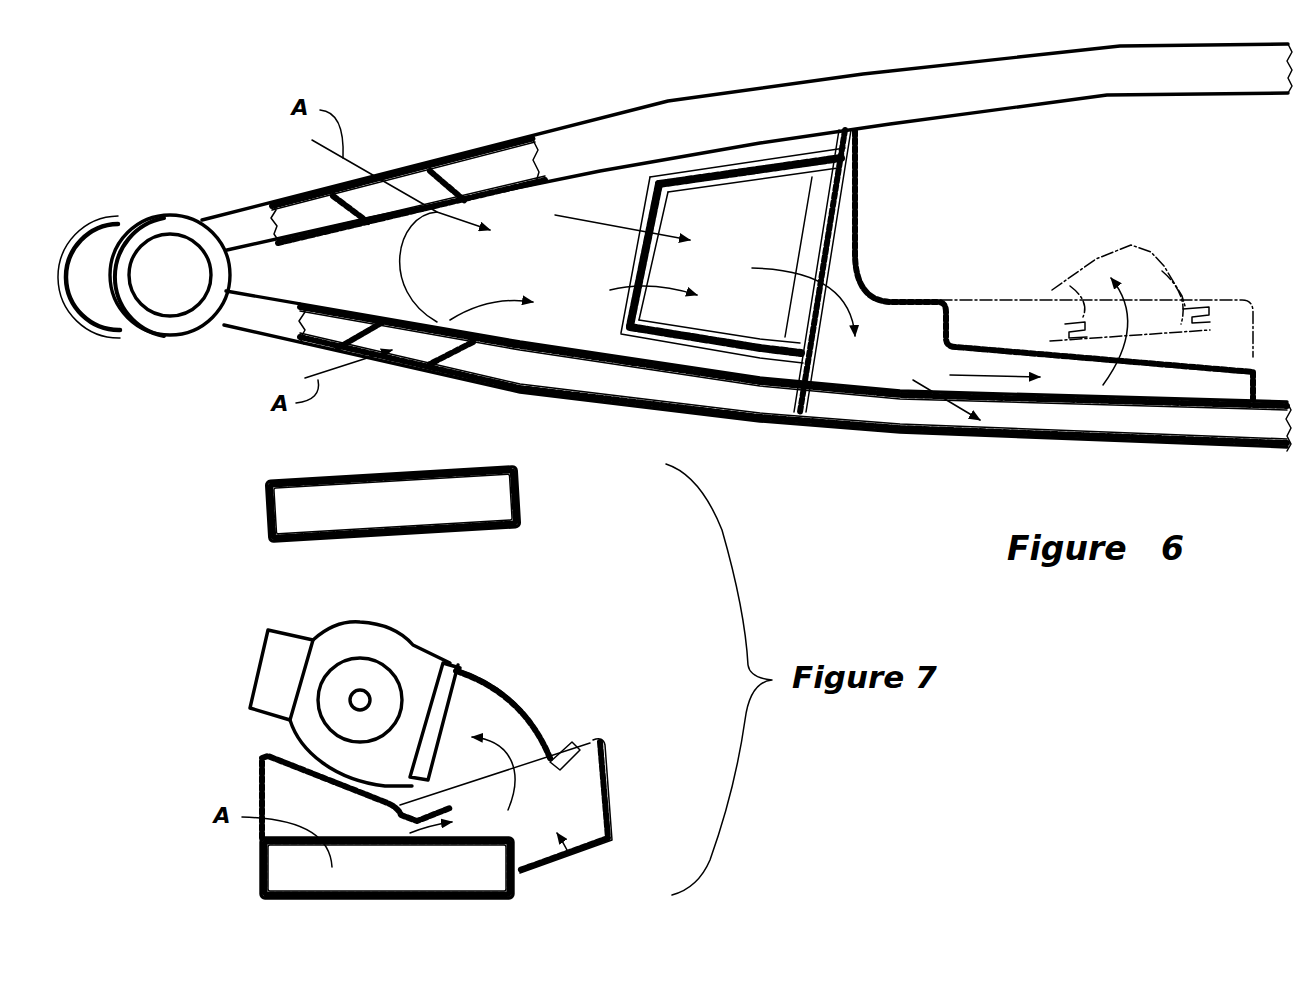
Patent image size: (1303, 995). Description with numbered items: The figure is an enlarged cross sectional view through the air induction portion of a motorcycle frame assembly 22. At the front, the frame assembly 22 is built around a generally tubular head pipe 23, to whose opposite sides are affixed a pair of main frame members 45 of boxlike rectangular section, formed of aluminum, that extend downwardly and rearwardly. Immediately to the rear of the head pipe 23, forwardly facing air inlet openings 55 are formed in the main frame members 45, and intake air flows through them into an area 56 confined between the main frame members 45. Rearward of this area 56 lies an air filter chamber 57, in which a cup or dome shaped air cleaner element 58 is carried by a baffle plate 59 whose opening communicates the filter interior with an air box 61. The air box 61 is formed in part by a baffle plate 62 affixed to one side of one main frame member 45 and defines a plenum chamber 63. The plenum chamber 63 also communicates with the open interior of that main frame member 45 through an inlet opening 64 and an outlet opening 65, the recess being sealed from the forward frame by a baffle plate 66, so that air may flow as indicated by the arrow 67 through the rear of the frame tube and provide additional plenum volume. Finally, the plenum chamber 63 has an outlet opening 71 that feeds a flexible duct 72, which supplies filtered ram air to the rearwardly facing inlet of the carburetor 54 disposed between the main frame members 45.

In FIG. 6, the frame assembly 22 is at (672, 96).
In FIG. 6, the head pipe 23 is at (172, 230).
In FIG. 6, the main frame members 45 is at (580, 137).
In FIG. 7, the main frame members 45 is at (524, 502).
In FIG. 7, the carburetor 54 is at (360, 635).
In FIG. 6, the air inlet openings 55 is at (403, 170).
In FIG. 7, the air inlet openings 55 is at (327, 867).
In FIG. 6, the area 56 is at (523, 212).
In FIG. 6, the air filter chamber 57 is at (787, 148).
In FIG. 6, the air cleaner element 58 is at (690, 343).
In FIG. 6, the baffle plate 59 is at (820, 360).
In FIG. 6, the air box 61 is at (886, 288).
In FIG. 7, the air box 61 is at (618, 828).
In FIG. 6, the baffle plate 62 is at (932, 300).
In FIG. 7, the baffle plate 62 is at (613, 777).
In FIG. 6, the plenum chamber 63 is at (1135, 400).
In FIG. 7, the plenum chamber 63 is at (567, 850).
In FIG. 6, the inlet opening 64 is at (910, 382).
In FIG. 6, the outlet opening 65 is at (1135, 400).
In FIG. 6, the baffle plate 66 is at (795, 400).
In FIG. 6, the arrow 67 is at (955, 405).
In FIG. 7, the outlet opening 71 is at (550, 763).
In FIG. 6, the flexible duct 72 is at (1148, 253).
In FIG. 7, the flexible duct 72 is at (527, 705).